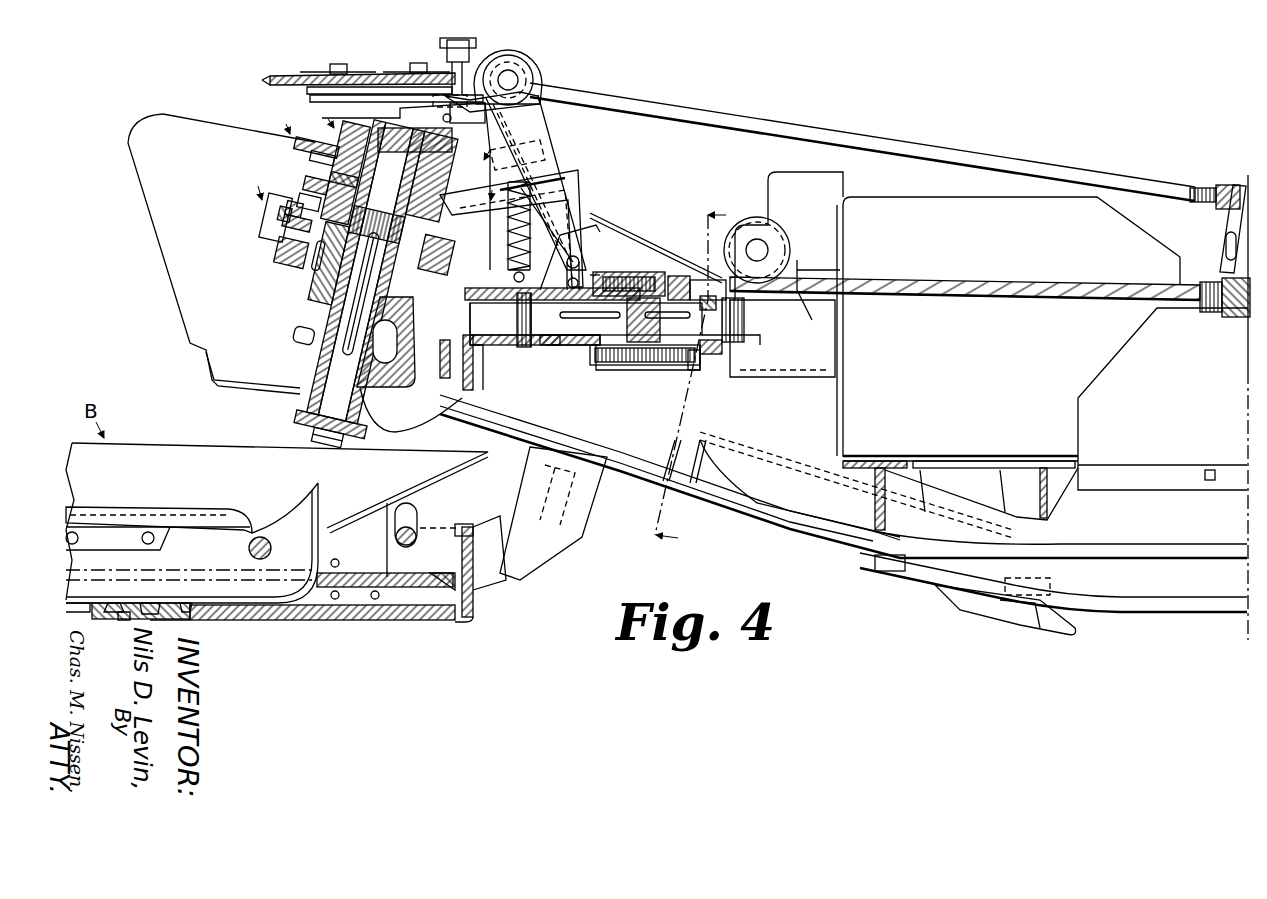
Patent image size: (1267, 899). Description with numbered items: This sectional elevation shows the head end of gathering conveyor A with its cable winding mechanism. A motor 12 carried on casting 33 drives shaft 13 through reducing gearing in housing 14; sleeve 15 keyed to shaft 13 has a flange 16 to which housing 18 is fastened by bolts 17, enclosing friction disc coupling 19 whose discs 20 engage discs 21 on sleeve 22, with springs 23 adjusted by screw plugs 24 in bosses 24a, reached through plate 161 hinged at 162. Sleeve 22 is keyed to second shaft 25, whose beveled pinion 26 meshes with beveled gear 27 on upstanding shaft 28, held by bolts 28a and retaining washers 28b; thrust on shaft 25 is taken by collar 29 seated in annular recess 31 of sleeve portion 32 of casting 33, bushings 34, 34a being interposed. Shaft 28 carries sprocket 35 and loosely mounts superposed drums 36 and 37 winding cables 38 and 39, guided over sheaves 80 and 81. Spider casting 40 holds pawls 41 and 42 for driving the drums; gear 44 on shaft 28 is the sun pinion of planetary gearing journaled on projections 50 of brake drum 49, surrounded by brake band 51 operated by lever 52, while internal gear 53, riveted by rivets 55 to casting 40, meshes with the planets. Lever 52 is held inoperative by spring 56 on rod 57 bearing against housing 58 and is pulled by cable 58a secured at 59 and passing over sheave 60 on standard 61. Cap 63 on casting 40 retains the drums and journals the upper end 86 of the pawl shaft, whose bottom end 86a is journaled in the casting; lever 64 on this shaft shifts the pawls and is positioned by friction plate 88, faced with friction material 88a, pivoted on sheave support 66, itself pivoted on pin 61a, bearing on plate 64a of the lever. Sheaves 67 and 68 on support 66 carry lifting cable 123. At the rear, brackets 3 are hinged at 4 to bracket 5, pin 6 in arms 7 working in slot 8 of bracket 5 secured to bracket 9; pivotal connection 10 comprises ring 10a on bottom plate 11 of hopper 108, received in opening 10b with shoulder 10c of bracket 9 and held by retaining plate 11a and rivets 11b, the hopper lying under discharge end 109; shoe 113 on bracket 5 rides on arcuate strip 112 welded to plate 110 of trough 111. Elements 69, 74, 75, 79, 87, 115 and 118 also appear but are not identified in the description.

The brackets 3 is at (560, 537).
The hinge 4 is at (434, 533).
The bracket 5 is at (398, 637).
The pin 6 is at (373, 663).
The arms 7 is at (483, 557).
The slot 8 is at (410, 523).
The bracket 9 is at (332, 663).
The pivotal connection 10 is at (155, 619).
The ring 10a is at (120, 603).
The opening 10b is at (188, 617).
The annular shoulder 10c is at (188, 606).
The bottom plate 11 is at (77, 604).
The retaining plate 11a is at (150, 603).
The rivets 11b is at (123, 612).
The motor 12 is at (1037, 217).
The shaft 13 is at (683, 313).
The housing 14 is at (785, 172).
The sleeve 15 is at (724, 298).
The flange 16 is at (710, 293).
The bolts 17 is at (680, 276).
The housing 18 is at (627, 272).
The friction disc coupling 19 is at (613, 345).
The discs 20 is at (650, 358).
The discs 21 is at (665, 377).
The sleeve 22 is at (590, 340).
The springs 23 is at (687, 350).
The screw plugs 24 is at (693, 357).
The bosses 24a is at (695, 368).
The second shaft 25 is at (467, 240).
The beveled pinion 26 is at (460, 394).
The beveled gear 27 is at (303, 270).
The upstanding shaft 28 is at (323, 343).
The bolts 28a is at (305, 431).
The retaining washers 28b is at (292, 410).
The collar 29 is at (525, 347).
The annular recess 31 is at (530, 345).
The sleeve portion 32 is at (537, 273).
The casting 33 is at (298, 393).
The bushing 34 is at (556, 345).
The bushing 34a is at (517, 345).
The sprocket 35 is at (294, 333).
The drum 36 is at (330, 160).
The drum 37 is at (320, 205).
The cable 38 is at (318, 138).
The cable 39 is at (340, 180).
The casting 40 is at (522, 148).
The pawl 41 is at (356, 150).
The pawl 42 is at (327, 187).
The gear 44 is at (392, 235).
The brake drum 49 is at (297, 223).
The projections 50 is at (320, 257).
The brake band 51 is at (266, 212).
The lever 52 is at (576, 258).
The internal gear 53 is at (292, 215).
The rivets 55 is at (300, 210).
The spring 56 is at (522, 230).
The rod 57 is at (587, 207).
The housing 58 is at (572, 172).
The cable 58a is at (567, 187).
The cable attachment 59 is at (575, 298).
The sheave 60 is at (525, 55).
The standard 61 is at (520, 122).
The pin 61a is at (513, 80).
The cap 63 is at (437, 162).
The lever 64 is at (538, 97).
The plate 64a is at (447, 92).
The sheave support 66 is at (412, 66).
The sheave 67 is at (334, 66).
The sheave 68 is at (400, 70).
The wedge 69 is at (1047, 623).
The rod end 74 is at (1222, 218).
The nuts 75 is at (1242, 190).
The rod 79 is at (893, 145).
The sheave 80 is at (770, 245).
The sheave 81 is at (1213, 312).
The pawl shaft upper end 86 is at (373, 104).
The pawl shaft bottom end 86a is at (292, 253).
The gear 87 is at (480, 236).
The friction plate 88 is at (433, 132).
The friction material 88a is at (408, 128).
The hopper 108 is at (145, 457).
The discharge end 109 is at (182, 286).
The plate 110 is at (365, 588).
The trough 111 is at (255, 594).
The arcuate strip 112 is at (463, 588).
The shoe 113 is at (436, 588).
The plate 115 is at (342, 572).
The ledge 118 is at (178, 511).
The cable 123 is at (268, 79).
The plate 161 is at (677, 267).
The hinge 162 is at (623, 267).